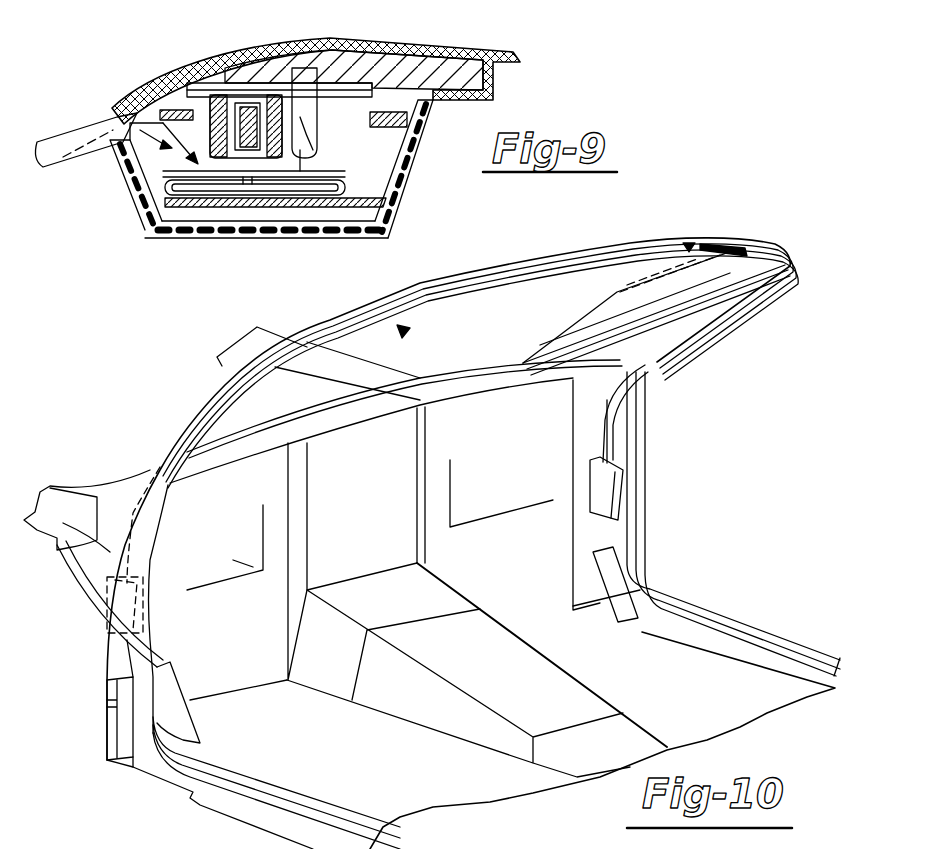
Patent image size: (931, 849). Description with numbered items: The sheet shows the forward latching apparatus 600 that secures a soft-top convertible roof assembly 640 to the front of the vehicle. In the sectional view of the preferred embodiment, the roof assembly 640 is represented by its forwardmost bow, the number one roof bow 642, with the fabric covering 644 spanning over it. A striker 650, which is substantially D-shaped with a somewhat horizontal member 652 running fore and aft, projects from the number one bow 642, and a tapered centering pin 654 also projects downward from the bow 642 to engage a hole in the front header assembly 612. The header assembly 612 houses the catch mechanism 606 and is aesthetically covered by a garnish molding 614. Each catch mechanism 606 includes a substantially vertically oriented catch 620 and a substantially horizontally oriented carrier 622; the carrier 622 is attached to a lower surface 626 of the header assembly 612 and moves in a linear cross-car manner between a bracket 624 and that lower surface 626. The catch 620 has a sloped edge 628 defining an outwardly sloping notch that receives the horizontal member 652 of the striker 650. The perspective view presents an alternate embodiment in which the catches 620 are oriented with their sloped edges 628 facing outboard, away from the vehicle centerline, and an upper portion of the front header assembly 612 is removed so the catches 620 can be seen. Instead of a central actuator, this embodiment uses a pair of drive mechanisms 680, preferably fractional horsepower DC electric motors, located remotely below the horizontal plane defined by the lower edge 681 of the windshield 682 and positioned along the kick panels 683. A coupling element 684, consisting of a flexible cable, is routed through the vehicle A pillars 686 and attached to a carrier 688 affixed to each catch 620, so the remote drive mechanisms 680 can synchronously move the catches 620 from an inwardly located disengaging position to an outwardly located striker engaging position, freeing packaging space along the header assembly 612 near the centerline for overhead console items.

In FIG. 9, the forward latching apparatus 600 is at (140, 130).
In FIG. 10, the forward latching apparatus 600 is at (404, 331).
In FIG. 9, the catch mechanism 606 is at (132, 120).
In FIG. 9, the front header assembly 612 is at (397, 187).
In FIG. 10, the front header assembly 612 is at (548, 254).
In FIG. 9, the garnish molding 614 is at (128, 180).
In FIG. 9, the catch 620 is at (240, 105).
In FIG. 10, the catch 620 is at (688, 245).
In FIG. 9, the carrier 622 is at (272, 195).
In FIG. 9, the bracket 624 is at (347, 207).
In FIG. 9, the lower surface 626 is at (150, 240).
In FIG. 10, the sloped edge 628 is at (362, 330).
In FIG. 9, the soft-top convertible roof assembly 640 is at (462, 52).
In FIG. 9, the number one roof bow 642 is at (182, 108).
In FIG. 9, the fabric covering 644 is at (375, 40).
In FIG. 9, the striker 650 is at (298, 108).
In FIG. 9, the horizontal member 652 is at (213, 195).
In FIG. 9, the tapered centering pin 654 is at (303, 195).
In FIG. 10, the drive mechanism 680 is at (597, 497).
In FIG. 10, the lower edge 681 is at (521, 378).
In FIG. 10, the windshield 682 is at (575, 326).
In FIG. 10, the kick panel 683 is at (613, 538).
In FIG. 10, the coupling element 684 is at (655, 393).
In FIG. 10, the A pillar 686 is at (710, 320).
In FIG. 10, the carrier 688 is at (728, 238).